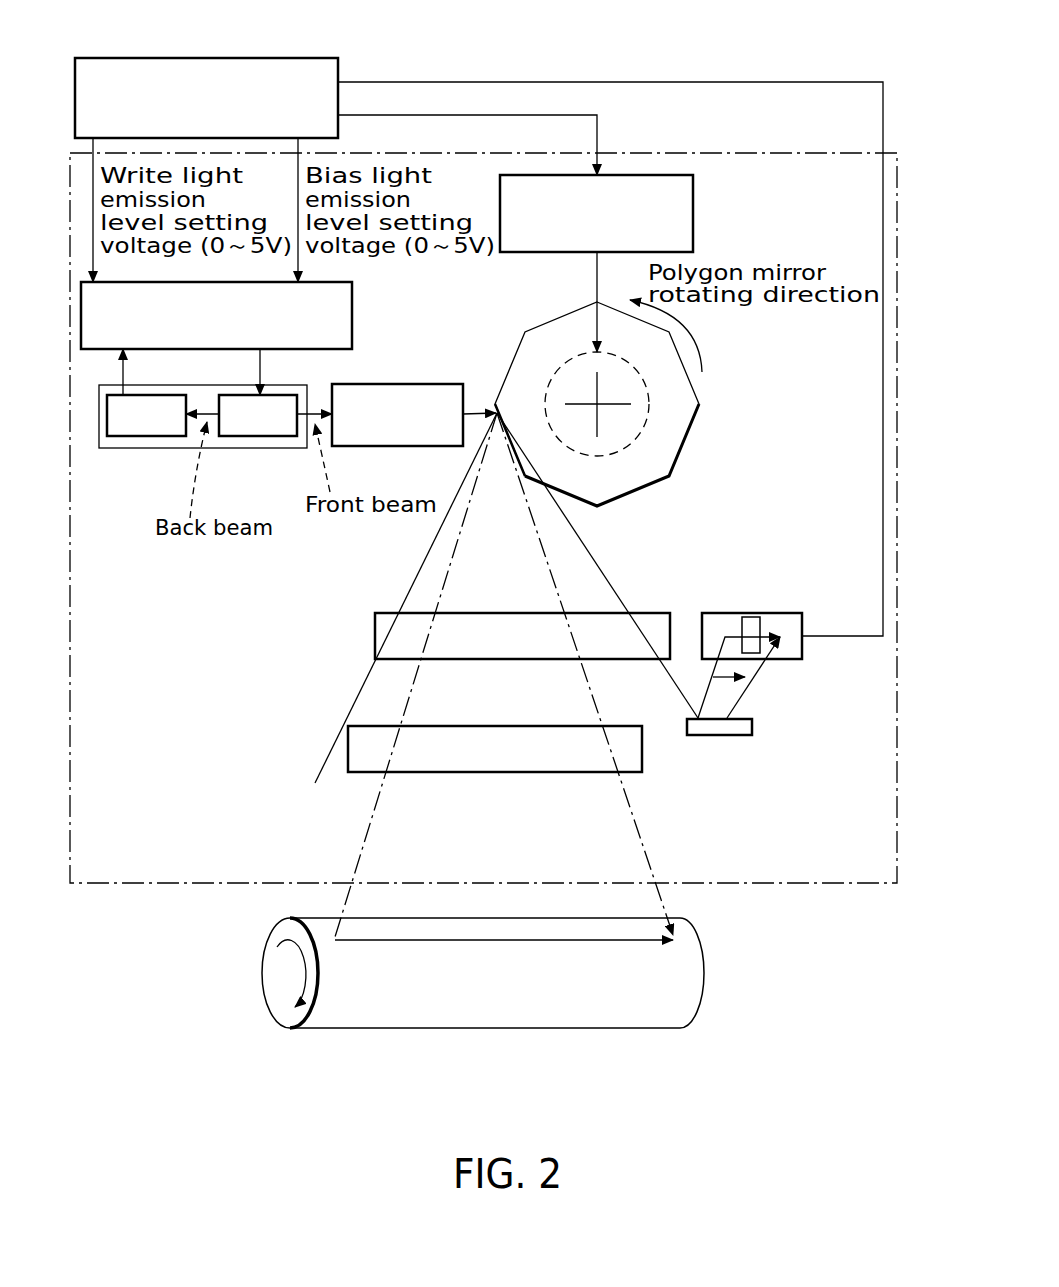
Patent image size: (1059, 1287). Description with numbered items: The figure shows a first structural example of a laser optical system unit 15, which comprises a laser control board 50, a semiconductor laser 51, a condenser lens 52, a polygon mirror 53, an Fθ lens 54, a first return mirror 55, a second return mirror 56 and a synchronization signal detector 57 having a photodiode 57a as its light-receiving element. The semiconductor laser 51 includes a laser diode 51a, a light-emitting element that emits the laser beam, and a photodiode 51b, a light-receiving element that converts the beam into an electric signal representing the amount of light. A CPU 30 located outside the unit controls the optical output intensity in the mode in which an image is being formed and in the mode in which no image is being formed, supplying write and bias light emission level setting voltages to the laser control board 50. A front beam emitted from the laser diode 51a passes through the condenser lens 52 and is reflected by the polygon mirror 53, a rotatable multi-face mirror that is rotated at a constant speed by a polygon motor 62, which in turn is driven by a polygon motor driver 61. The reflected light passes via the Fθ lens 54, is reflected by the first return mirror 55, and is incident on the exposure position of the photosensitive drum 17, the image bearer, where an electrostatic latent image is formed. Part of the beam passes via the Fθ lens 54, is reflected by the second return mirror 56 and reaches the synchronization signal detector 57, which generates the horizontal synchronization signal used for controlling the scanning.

The laser optical system unit 15 is at (668, 153).
The CPU 30 is at (244, 58).
The polygon motor driver 61 is at (693, 216).
The laser control board 50 is at (352, 306).
The semiconductor laser 51 is at (106, 448).
The laser diode 51a is at (255, 436).
The photodiode 51b is at (150, 436).
The condenser lens 52 is at (440, 384).
The polygon mirror 53 is at (652, 462).
The polygon motor 62 is at (605, 456).
The Fθ lens 54 is at (375, 622).
The first return mirror 55 is at (348, 772).
The second return mirror 56 is at (725, 735).
The synchronization signal detector 57 is at (797, 652).
The photodiode 57a is at (751, 617).
The photosensitive drum 17 is at (694, 975).